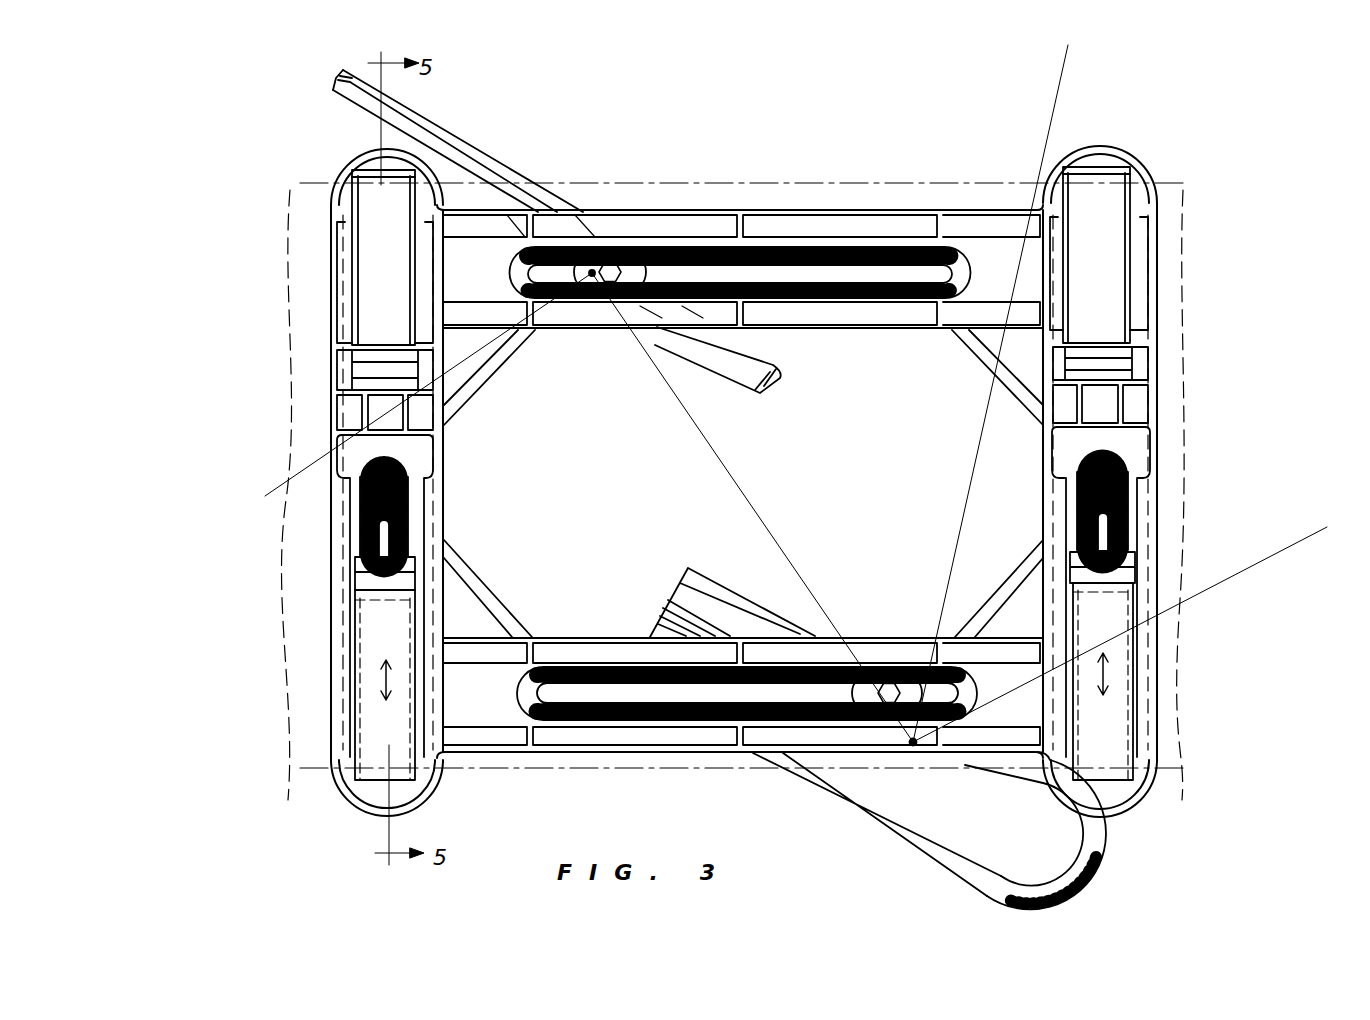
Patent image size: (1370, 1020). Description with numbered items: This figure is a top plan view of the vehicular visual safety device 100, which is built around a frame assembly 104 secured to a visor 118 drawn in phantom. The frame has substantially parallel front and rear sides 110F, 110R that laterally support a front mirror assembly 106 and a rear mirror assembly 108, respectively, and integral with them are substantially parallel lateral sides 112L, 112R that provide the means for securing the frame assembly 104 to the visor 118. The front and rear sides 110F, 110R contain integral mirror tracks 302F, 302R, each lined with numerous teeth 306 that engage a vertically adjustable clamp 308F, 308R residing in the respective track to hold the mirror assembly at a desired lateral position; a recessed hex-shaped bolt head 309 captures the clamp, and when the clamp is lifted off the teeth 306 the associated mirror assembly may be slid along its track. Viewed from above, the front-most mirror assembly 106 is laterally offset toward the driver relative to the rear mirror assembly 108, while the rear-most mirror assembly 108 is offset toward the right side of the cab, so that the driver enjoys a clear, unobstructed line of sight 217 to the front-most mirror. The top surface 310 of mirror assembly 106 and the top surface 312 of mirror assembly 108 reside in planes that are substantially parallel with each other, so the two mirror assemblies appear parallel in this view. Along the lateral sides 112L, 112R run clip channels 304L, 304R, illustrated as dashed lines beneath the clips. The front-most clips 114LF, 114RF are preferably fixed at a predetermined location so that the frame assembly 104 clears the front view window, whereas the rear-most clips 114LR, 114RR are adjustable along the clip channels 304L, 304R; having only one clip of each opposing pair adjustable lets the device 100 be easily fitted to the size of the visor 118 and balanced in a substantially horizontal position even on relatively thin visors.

The vehicular visual safety device 100 is at (188, 455).
The frame assembly 104 is at (318, 336).
The front mirror assembly 106 is at (443, 117).
The rear mirror assembly 108 is at (847, 812).
The front side 110F is at (805, 207).
The rear side 110R is at (680, 779).
The left side 112L is at (330, 387).
The right side 112R is at (1157, 290).
The left front clip 114LF is at (380, 243).
The right front clip 114RF is at (1087, 215).
The left rear clip 114LR is at (386, 754).
The right rear clip 114RR is at (1108, 714).
The visor 118 is at (287, 288).
The line of sight 217 is at (265, 496).
The front mirror track 302F is at (810, 290).
The rear mirror track 302R is at (607, 680).
The left clip channel 304L is at (340, 592).
The right clip channel 304R is at (1150, 513).
The teeth 306 is at (928, 248).
The front vertically adjustable clamp 308F is at (640, 252).
The rear vertically adjustable clamp 308R is at (900, 685).
The hex-shaped bolt head 309 is at (621, 262).
The top surface of front mirror assembly 310 is at (372, 113).
The top surface of rear mirror assembly 312 is at (1033, 775).